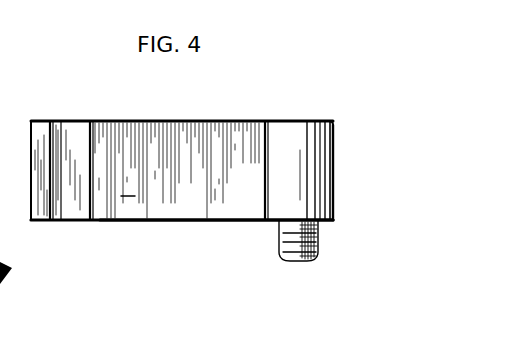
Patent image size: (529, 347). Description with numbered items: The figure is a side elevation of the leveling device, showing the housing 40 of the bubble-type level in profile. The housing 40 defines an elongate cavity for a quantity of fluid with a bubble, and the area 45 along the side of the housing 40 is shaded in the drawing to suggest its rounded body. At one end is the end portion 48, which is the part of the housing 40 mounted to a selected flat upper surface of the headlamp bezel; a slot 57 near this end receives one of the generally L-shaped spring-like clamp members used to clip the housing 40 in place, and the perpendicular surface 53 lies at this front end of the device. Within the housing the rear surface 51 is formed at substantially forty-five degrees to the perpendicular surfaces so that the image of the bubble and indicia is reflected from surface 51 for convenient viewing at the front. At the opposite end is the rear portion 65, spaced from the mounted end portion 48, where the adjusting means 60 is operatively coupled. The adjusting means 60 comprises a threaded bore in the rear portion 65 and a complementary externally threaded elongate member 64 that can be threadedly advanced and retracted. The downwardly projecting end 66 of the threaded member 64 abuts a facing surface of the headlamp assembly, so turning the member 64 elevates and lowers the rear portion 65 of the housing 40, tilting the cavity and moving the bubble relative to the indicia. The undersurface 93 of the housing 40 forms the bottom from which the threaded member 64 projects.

The housing 40 is at (127, 119).
The cylindrical housing wall 45 is at (176, 121).
The end portion 48 is at (25, 214).
The rear surface 51 is at (128, 185).
The perpendicular surface 53 is at (30, 135).
The slot 57 is at (55, 121).
The adjusting means 60 is at (282, 118).
The externally threaded elongate member 64 is at (285, 233).
The rear portion 65 is at (333, 131).
The projecting end 66 is at (295, 262).
The undersurface 93 is at (170, 221).